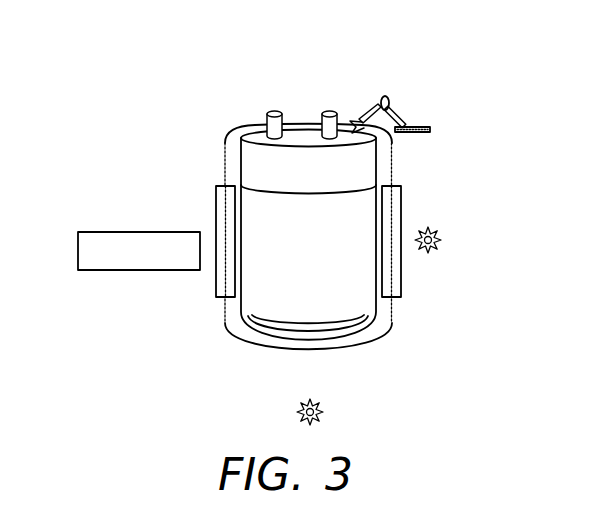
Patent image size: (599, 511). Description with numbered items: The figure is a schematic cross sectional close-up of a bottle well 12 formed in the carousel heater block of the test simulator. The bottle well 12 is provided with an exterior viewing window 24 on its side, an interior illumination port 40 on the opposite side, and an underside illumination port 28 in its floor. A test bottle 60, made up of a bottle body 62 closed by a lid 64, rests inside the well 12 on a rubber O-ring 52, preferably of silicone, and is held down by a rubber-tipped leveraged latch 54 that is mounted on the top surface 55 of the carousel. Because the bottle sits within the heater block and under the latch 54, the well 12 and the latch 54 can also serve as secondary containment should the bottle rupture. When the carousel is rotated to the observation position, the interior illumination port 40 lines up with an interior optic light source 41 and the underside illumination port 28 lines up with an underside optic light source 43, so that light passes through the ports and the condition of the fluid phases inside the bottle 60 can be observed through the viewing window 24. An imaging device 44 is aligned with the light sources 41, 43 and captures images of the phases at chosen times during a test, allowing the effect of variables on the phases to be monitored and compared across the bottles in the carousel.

The bottle well 12 is at (234, 133).
The test bottle 60 is at (305, 137).
The lid 64 is at (262, 173).
The bottle body 62 is at (262, 303).
The exterior viewing window 24 is at (217, 222).
The interior illumination port 40 is at (401, 272).
The interior optic light source 41 is at (440, 231).
The underside optic light source 43 is at (322, 400).
The imaging device 44 is at (78, 252).
The rubber O-ring 52 is at (380, 316).
The underside illumination port 28 is at (298, 330).
The rubber-tipped leveraged latch 54 is at (400, 123).
The top surface 55 is at (429, 134).